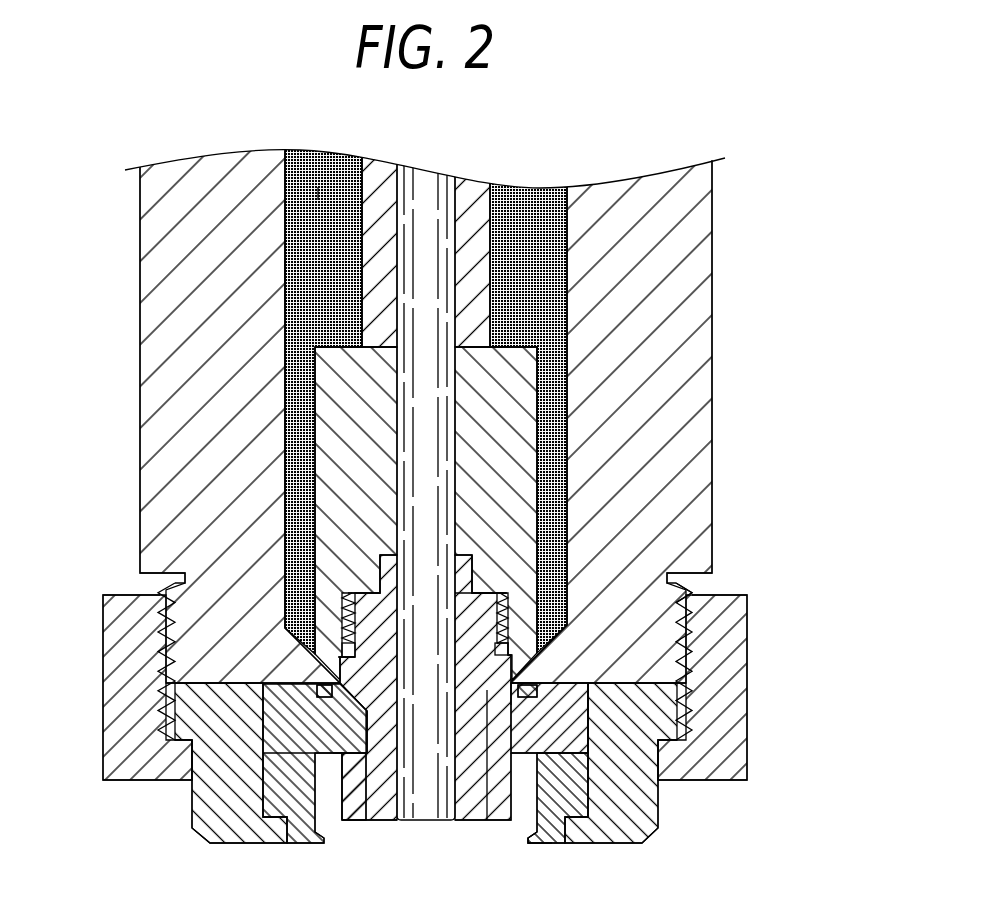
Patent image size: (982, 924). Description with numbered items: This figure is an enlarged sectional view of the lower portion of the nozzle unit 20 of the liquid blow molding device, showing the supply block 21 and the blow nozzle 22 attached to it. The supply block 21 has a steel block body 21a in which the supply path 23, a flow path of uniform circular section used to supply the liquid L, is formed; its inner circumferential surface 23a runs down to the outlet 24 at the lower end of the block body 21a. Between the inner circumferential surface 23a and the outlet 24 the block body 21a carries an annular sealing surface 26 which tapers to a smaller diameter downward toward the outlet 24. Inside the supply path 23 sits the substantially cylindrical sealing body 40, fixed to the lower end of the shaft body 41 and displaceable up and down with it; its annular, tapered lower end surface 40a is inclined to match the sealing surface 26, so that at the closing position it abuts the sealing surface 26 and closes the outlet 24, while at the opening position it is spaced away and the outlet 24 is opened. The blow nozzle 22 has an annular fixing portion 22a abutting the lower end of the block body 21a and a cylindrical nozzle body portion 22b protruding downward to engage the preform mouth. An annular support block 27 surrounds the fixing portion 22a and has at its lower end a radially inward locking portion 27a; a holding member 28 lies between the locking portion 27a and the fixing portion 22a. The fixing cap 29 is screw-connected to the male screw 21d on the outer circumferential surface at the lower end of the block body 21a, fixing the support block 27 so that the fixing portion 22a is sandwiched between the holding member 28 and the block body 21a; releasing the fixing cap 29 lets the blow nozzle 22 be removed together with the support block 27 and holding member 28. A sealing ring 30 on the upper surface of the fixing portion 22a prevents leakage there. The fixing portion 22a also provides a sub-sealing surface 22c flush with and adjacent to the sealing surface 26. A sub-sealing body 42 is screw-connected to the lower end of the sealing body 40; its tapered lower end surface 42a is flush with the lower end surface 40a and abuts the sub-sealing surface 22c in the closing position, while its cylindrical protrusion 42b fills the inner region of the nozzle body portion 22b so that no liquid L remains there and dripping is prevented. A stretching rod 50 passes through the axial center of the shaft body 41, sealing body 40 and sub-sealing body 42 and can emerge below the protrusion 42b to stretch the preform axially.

The nozzle unit 20 is at (743, 200).
The supply block 21 is at (712, 287).
The block body 21a is at (700, 352).
The male screw 21d is at (684, 655).
The blow nozzle 22 is at (496, 824).
The fixing portion 22a is at (574, 722).
The nozzle body portion 22b is at (353, 798).
The sub-sealing surface 22c is at (514, 705).
The supply path 23 is at (300, 237).
The inner circumferential surface 23a is at (298, 275).
The outlet 24 is at (335, 690).
The sealing surface 26 is at (667, 613).
The support block 27 is at (655, 830).
The locking portion 27a is at (573, 830).
The holding member 28 is at (585, 795).
The fixing cap 29 is at (115, 662).
The sealing ring 30 is at (317, 693).
The sealing body 40 is at (533, 460).
The lower end surface 40a is at (692, 598).
The shaft body 41 is at (480, 235).
The sub-sealing body 42 is at (330, 755).
The lower end surface 42a is at (362, 728).
The protrusion 42b is at (381, 800).
The stretching rod 50 is at (427, 805).
The liquid L is at (318, 187).